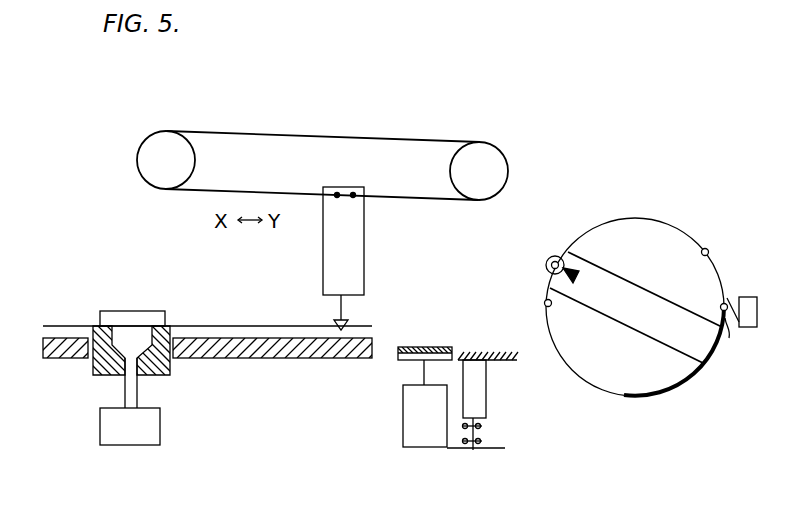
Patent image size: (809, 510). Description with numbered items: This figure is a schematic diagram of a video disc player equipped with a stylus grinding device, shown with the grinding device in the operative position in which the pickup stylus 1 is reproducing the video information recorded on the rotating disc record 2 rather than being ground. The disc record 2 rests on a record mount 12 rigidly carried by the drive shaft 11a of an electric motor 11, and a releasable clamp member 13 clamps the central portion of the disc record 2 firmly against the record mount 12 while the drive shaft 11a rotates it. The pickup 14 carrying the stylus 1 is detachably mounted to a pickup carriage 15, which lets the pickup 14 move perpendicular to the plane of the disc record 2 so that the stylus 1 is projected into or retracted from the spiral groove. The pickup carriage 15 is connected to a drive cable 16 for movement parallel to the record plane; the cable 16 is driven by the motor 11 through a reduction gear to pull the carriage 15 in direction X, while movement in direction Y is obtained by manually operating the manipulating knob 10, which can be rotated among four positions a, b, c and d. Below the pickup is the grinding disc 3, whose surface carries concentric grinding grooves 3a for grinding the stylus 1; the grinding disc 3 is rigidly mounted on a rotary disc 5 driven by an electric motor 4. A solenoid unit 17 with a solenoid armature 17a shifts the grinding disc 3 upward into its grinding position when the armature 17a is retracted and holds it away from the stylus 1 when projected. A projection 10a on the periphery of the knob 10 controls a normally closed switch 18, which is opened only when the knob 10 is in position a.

The pickup stylus 1 is at (332, 323).
The disc record 2 is at (212, 326).
The grinding disc 3 is at (420, 347).
The grinding grooves 3a is at (440, 347).
The electric motor 4 is at (408, 417).
The rotary disc 5 is at (403, 358).
The manipulating knob 10 is at (641, 397).
The projection 10a is at (547, 262).
The electric motor 11 is at (145, 435).
The drive shaft 11a is at (128, 393).
The record mount 12 is at (165, 375).
The clamp member 13 is at (130, 311).
The pickup 14 is at (343, 310).
The pickup carriage 15 is at (364, 233).
The drive cable 16 is at (290, 131).
The solenoid unit 17 is at (480, 388).
The solenoid armature 17a is at (482, 432).
The normally closed switch 18 is at (752, 327).